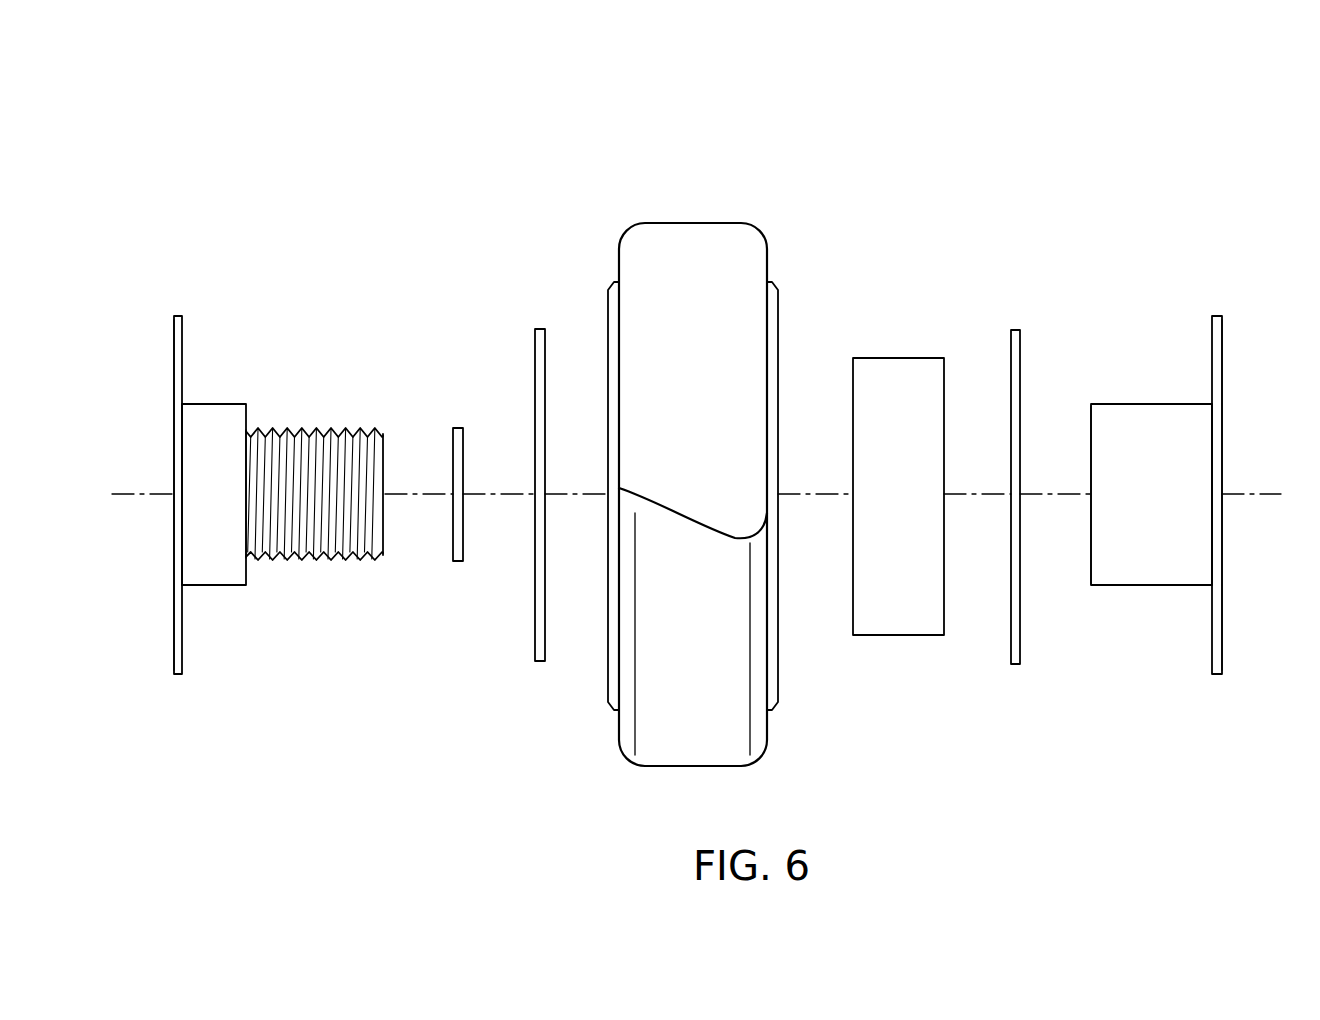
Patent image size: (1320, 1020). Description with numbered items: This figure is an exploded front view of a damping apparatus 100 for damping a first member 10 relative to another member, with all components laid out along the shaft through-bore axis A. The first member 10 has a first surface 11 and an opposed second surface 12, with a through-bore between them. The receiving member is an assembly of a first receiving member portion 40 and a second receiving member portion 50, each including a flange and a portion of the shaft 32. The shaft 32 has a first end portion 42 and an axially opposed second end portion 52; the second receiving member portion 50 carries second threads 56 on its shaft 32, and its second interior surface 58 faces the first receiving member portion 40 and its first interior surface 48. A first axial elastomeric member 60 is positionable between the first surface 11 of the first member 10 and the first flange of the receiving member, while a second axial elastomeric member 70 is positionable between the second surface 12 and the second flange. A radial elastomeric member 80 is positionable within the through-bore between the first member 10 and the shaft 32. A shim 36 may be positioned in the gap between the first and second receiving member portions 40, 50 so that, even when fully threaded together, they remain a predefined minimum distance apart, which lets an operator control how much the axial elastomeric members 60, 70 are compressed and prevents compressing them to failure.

The damping apparatus 100 is at (1104, 154).
The first member 10 is at (692, 223).
The first surface 11 is at (779, 314).
The second surface 12 is at (607, 314).
The shaft 32 is at (213, 404).
The shim 36 is at (456, 428).
The first receiving member portion 40 is at (1222, 343).
The first end portion 42 is at (1100, 532).
The first interior surface 48 is at (1091, 412).
The second receiving member portion 50 is at (174, 333).
The second end portion 52 is at (697, 525).
The second threads 56 is at (347, 560).
The second interior surface 58 is at (248, 418).
The first axial elastomeric member 60 is at (1016, 330).
The second axial elastomeric member 70 is at (540, 329).
The radial elastomeric member 80 is at (900, 358).
The shaft through-bore axis A is at (1270, 492).